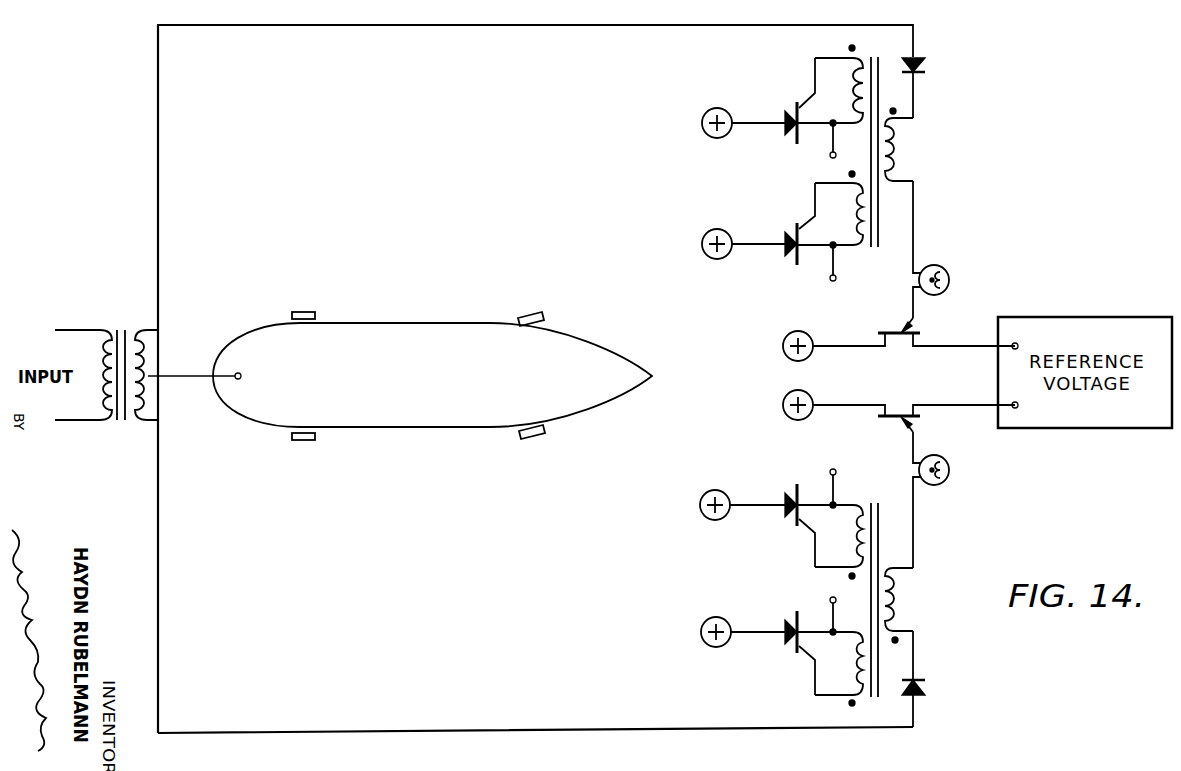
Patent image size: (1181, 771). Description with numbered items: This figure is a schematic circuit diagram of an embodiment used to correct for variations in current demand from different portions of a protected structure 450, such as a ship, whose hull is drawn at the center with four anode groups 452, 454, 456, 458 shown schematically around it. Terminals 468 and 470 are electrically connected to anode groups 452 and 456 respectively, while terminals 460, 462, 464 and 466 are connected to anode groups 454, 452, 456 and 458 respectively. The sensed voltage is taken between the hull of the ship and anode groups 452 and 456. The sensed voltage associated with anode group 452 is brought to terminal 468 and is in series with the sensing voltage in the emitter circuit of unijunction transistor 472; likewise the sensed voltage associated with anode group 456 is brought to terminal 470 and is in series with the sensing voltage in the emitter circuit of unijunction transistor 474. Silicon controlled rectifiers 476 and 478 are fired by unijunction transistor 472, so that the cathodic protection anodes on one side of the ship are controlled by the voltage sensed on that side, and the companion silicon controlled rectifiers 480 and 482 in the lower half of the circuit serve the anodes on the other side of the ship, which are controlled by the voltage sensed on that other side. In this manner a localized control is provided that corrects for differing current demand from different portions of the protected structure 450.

The protected structure 450 is at (405, 387).
The anode group 452 is at (543, 315).
The anode group 454 is at (294, 312).
The anode group 456 is at (296, 441).
The anode group 458 is at (543, 432).
The terminal 460 is at (829, 155).
The terminal 462 is at (828, 279).
The terminal 464 is at (828, 472).
The terminal 466 is at (826, 600).
The terminal 468 is at (787, 335).
The terminal 470 is at (787, 416).
The unijunction transistor 472 is at (920, 342).
The unijunction transistor 474 is at (922, 410).
The silicon controlled rectifier 476 is at (795, 106).
The silicon controlled rectifier 478 is at (795, 230).
The silicon controlled rectifier 480 is at (795, 517).
The silicon controlled rectifier 482 is at (795, 646).